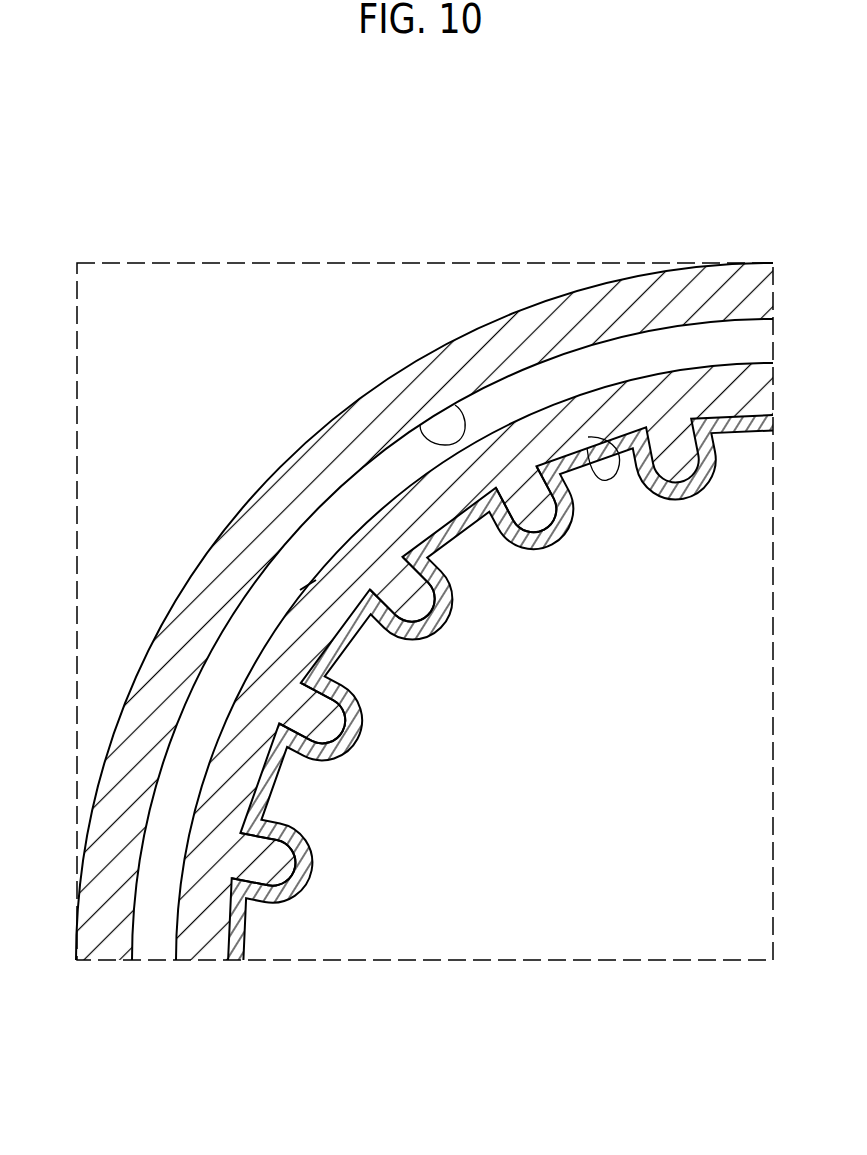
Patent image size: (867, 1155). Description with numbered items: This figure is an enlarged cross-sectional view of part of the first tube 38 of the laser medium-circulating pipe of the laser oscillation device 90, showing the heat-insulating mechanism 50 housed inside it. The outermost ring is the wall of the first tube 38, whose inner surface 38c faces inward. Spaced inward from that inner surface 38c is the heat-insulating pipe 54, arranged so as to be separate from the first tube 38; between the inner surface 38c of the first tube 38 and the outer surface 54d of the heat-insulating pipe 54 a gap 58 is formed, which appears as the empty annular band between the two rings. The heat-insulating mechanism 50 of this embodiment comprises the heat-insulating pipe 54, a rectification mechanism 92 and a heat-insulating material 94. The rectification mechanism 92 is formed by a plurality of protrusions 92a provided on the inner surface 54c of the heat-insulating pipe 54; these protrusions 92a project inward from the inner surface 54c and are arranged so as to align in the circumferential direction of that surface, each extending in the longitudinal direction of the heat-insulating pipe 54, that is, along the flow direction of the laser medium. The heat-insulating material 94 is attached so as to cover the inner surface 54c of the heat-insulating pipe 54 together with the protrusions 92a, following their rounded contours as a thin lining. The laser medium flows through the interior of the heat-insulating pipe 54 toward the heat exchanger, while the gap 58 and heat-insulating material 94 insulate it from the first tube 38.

The laser oscillation device 90 is at (751, 172).
The first tube 38 is at (298, 470).
The inner surface of the first tube 38c is at (455, 405).
The heat-insulating pipe 54 is at (213, 745).
The inner surface of the heat-insulating pipe 54c is at (587, 448).
The outer surface of the heat-insulating pipe 54d is at (307, 585).
The gap 58 is at (213, 690).
The heat-insulating mechanism 50 is at (620, 540).
The rectification mechanism 92 is at (625, 760).
The protrusion 92a is at (337, 717).
The heat-insulating material 94 is at (308, 848).